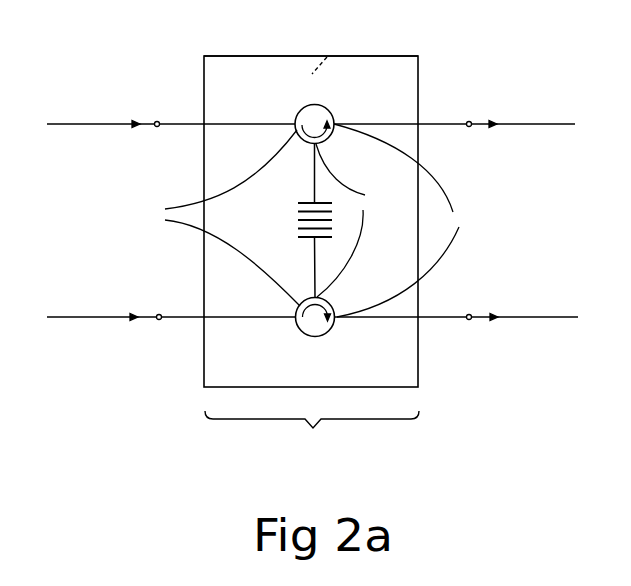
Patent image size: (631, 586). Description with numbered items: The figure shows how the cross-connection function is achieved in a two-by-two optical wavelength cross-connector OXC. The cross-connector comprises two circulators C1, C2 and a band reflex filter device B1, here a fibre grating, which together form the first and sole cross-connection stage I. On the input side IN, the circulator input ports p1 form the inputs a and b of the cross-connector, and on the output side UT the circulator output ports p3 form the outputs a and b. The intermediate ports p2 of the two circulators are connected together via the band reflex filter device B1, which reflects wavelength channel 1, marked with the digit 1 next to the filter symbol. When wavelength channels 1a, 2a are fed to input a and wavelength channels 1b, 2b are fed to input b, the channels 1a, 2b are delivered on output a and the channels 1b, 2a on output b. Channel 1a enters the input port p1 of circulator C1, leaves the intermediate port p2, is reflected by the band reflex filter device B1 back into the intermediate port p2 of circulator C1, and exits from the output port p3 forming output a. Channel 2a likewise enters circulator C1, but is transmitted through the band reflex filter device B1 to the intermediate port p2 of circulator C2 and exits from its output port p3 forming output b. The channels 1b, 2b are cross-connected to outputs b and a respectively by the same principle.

The first cross-connection stage I is at (311, 257).
The wavelength cross-connector OXC is at (311, 39).
The input side IN is at (109, 77).
The output side UT is at (515, 77).
The wavelength channel 1a is at (301, 116).
The wavelength channel 2a is at (338, 213).
The wavelength channel 1b is at (300, 309).
The wavelength channel 2b is at (336, 210).
The input a / output a is at (311, 116).
The input b / output b is at (311, 308).
The circulator C1 is at (301, 121).
The circulator C2 is at (301, 326).
The band reflex filter device B1 is at (300, 222).
The wavelength channel 1 is at (334, 221).
The circulator input port p1 is at (219, 218).
The circulator intermediate port p2 is at (352, 220).
The circulator output port p3 is at (411, 220).